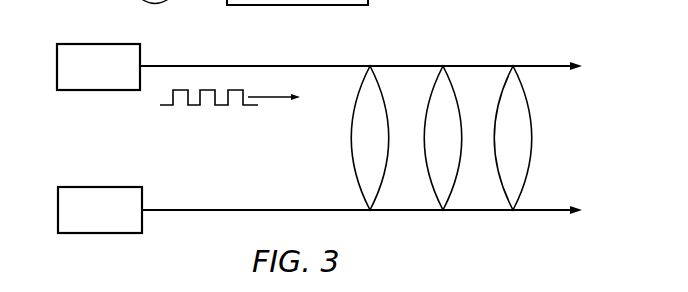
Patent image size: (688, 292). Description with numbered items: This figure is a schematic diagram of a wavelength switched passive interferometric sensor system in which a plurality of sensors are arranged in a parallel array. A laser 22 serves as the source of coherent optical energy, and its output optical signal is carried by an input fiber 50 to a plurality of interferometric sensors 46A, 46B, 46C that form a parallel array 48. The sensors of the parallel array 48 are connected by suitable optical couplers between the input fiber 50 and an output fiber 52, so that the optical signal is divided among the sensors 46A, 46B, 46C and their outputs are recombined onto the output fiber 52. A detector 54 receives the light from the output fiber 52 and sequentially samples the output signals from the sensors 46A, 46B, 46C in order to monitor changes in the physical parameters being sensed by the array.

The laser 22 is at (90, 44).
The detector 54 is at (118, 187).
The input fiber 50 is at (230, 66).
The parallel array 48 is at (408, 218).
The output fiber 52 is at (492, 212).
The interferometric sensor 46A is at (332, 152).
The interferometric sensor 46B is at (450, 60).
The interferometric sensor 46C is at (525, 60).